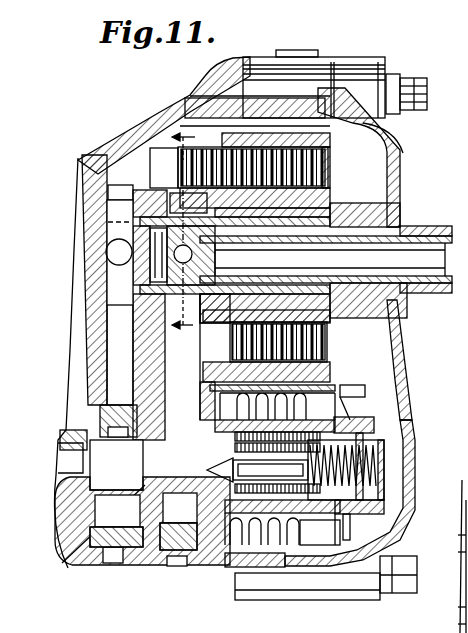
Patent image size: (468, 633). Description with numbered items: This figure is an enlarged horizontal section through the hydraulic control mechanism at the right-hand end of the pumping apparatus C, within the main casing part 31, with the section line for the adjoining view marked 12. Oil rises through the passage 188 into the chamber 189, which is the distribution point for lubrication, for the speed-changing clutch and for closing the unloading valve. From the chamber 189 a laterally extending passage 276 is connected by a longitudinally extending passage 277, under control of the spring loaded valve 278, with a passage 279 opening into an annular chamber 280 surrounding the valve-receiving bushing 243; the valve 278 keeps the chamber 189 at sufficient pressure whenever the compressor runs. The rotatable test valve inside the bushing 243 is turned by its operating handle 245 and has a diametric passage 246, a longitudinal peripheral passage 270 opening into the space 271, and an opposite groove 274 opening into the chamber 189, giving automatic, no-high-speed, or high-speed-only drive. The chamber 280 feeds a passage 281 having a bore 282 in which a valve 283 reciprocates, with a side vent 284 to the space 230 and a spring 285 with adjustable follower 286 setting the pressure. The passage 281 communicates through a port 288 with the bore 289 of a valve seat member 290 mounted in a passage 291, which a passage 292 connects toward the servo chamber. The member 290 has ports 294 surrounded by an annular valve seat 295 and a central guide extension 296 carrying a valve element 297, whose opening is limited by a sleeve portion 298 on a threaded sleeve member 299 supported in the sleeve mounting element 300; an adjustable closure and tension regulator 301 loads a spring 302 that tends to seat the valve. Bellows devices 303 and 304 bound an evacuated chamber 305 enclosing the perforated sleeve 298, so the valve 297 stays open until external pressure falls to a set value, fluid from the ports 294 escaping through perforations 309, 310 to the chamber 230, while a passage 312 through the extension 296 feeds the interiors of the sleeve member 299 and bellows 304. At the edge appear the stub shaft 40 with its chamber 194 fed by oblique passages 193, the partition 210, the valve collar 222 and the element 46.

The main casing part 31 is at (266, 102).
The pumping apparatus C is at (352, 88).
The section line 12- 12 is at (195, 240).
The spring loaded valve 278 is at (163, 157).
The longitudinally extending passage 277 is at (137, 157).
The passage 279 is at (108, 186).
The laterally extending passage 276 is at (115, 196).
The longitudinal peripheral groove 274 is at (102, 218).
The passage 188 is at (106, 256).
The diametric passage 246 is at (168, 250).
The chamber 189 is at (135, 290).
The passage 281 is at (108, 333).
The side vent 284 is at (130, 362).
The port 288 is at (170, 420).
The passage 292 is at (75, 463).
The bore 289 is at (90, 510).
The passage 291 is at (60, 560).
The valve seat member 290 is at (142, 500).
The passage 312 is at (190, 560).
The space 271 is at (282, 242).
The valve-receiving bushing 243 is at (268, 246).
The longitudinal peripheral passage 270 is at (211, 257).
The operating handle 245 is at (440, 232).
The bore 282 is at (398, 302).
The annular chamber 280 is at (332, 176).
The spring 285 is at (320, 342).
The adjustable follower 286 is at (330, 362).
The valve 283 is at (334, 388).
The bellows device 303 is at (225, 395).
The valve element 297 is at (232, 428).
The annular valve seat 295 is at (235, 442).
The ports 294 is at (214, 466).
The bellows device 304 is at (258, 535).
The central guide extension 296 is at (222, 552).
The perforation 310 is at (314, 545).
The chamber 305 is at (248, 567).
The sleeve portion 298 is at (285, 600).
The adjustable closure element and spring tension regulator 301 is at (378, 434).
The threaded sleeve member 299 is at (372, 425).
The spring 302 is at (380, 466).
The sleeve mounting element 300 is at (362, 392).
The chamber 230 is at (382, 406).
The perforation 309 is at (332, 566).
The adjacent rod 46 is at (463, 512).
The left-hand end collar 222 is at (462, 524).
The obliquely disposed passages 193 is at (460, 538).
The stub shaft 40 is at (460, 552).
The partition 210 is at (460, 607).
The chamber 194 is at (460, 623).